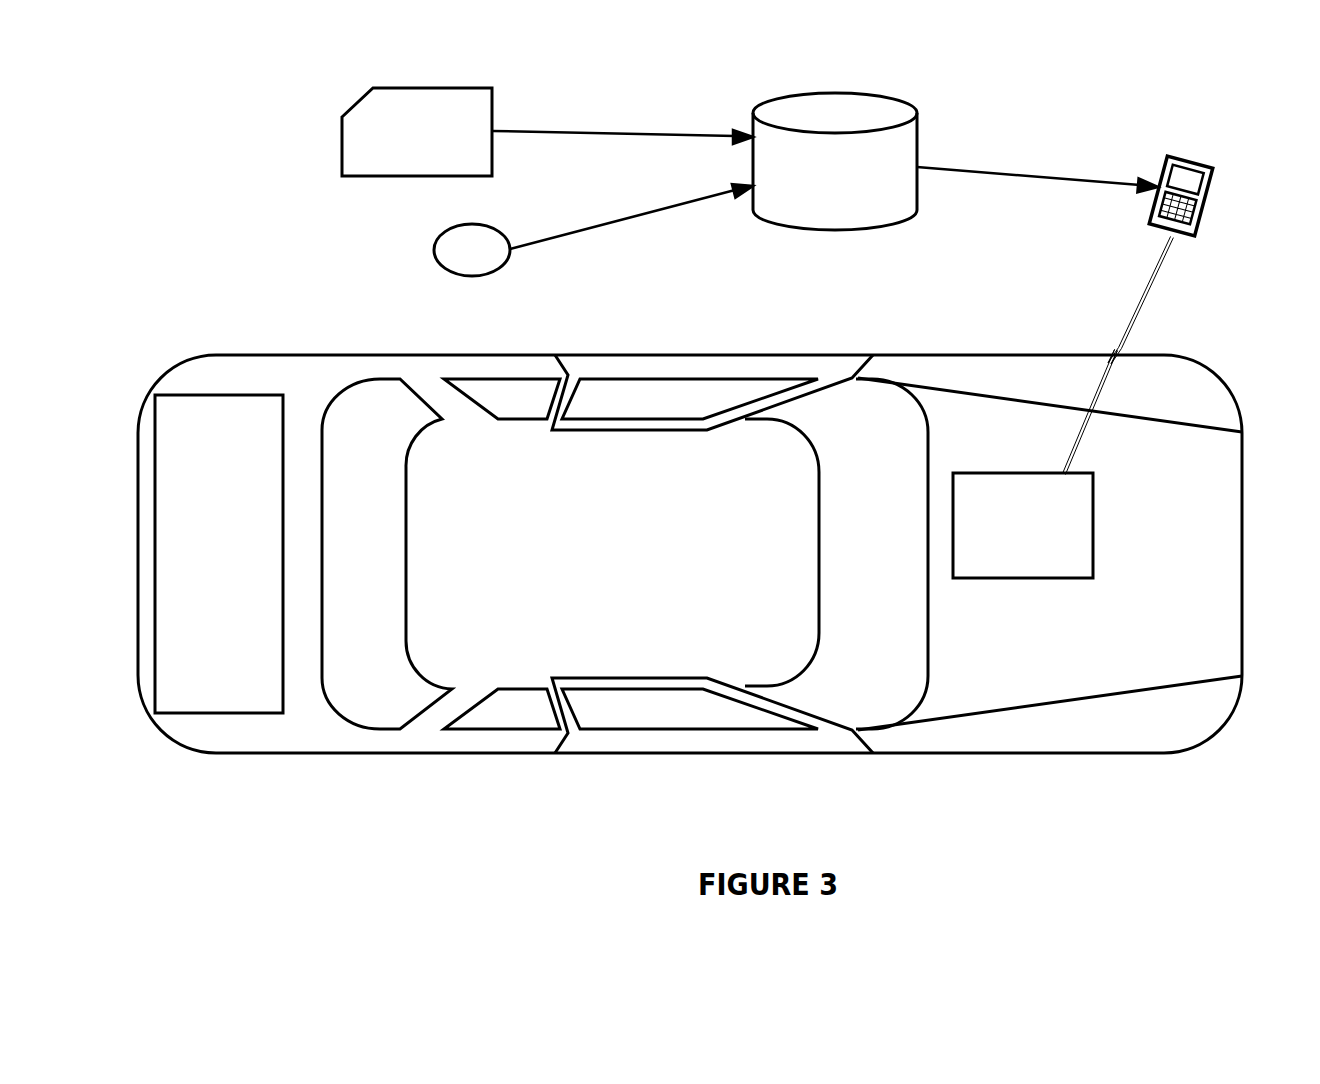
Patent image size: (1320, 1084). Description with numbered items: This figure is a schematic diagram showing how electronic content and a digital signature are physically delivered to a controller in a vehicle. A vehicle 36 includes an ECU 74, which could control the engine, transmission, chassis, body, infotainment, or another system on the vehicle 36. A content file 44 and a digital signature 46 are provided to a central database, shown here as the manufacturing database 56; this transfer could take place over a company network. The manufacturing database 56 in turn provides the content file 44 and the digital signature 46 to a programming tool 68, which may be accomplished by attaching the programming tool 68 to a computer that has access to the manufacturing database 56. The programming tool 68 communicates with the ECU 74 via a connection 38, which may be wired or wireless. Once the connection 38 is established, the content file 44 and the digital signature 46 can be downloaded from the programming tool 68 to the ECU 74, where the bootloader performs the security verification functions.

The vehicle 36 is at (329, 355).
The connection 38 is at (1140, 310).
The content file 44 is at (417, 132).
The digital signature 46 is at (472, 250).
The manufacturing database 56 is at (835, 161).
The programming tool 68 is at (1207, 203).
The ECU 74 is at (1023, 525).